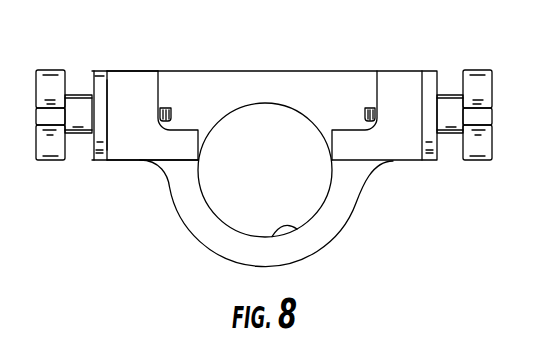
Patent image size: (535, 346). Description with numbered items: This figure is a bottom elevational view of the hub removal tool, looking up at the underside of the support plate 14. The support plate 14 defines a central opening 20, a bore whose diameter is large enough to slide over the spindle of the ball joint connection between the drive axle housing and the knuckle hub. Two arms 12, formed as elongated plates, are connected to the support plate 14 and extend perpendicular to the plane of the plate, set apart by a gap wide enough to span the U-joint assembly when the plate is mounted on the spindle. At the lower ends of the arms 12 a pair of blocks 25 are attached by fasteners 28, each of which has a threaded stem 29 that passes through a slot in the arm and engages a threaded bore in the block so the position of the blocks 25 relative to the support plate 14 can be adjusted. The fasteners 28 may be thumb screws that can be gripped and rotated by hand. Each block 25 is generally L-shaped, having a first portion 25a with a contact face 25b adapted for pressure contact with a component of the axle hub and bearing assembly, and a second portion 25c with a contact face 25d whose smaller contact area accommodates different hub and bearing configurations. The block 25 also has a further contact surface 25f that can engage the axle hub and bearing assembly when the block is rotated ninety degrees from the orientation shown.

The arms 12 is at (102, 88).
The support plate 14 is at (332, 215).
The central opening 20 is at (300, 228).
The blocks 25 is at (121, 153).
The first portion 25a is at (180, 142).
The contact face 25b is at (130, 162).
The second portion 25c is at (143, 90).
The contact face 25d is at (137, 72).
The contact surface 25f is at (412, 130).
The fasteners 28 is at (50, 148).
The threaded stem 29 is at (371, 108).